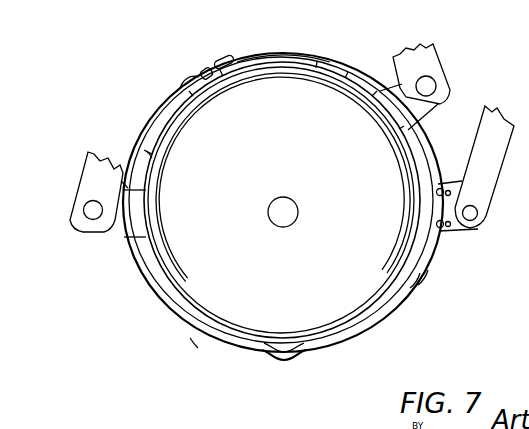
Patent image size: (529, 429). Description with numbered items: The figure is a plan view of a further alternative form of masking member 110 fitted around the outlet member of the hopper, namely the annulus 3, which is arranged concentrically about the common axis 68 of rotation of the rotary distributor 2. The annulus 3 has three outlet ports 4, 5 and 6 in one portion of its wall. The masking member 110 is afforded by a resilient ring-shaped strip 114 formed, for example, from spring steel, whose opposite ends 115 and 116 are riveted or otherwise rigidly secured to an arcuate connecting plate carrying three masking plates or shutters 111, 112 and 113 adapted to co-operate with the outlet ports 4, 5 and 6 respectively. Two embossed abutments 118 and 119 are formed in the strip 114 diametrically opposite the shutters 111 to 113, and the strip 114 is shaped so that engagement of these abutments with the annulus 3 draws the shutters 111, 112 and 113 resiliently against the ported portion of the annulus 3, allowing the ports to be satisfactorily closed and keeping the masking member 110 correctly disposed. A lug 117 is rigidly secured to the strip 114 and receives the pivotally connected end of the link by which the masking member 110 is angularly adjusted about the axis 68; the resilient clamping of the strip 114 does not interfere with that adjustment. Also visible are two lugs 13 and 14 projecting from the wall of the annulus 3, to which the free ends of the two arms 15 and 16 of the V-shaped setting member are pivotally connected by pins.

The rotary distributor 2 is at (510, 150).
The annulus 3 is at (194, 318).
The outlet port 4 is at (178, 129).
The outlet port 5 is at (262, 78).
The outlet port 6 is at (348, 94).
The lug 13 is at (112, 238).
The lug 14 is at (424, 110).
The arm 15 is at (86, 163).
The arm 16 is at (436, 57).
The common axis 68 is at (270, 224).
The masking member 110 is at (157, 309).
The masking plate or shutter 111 is at (147, 154).
The masking plate or shutter 112 is at (203, 70).
The masking plate or shutter 113 is at (302, 52).
The resilient ring-shaped strip 114 is at (197, 345).
The end of strip 115 is at (186, 87).
The end of strip 116 is at (230, 60).
The lug 117 is at (463, 230).
The embossed abutment 118 is at (281, 348).
The embossed abutment 119 is at (405, 281).